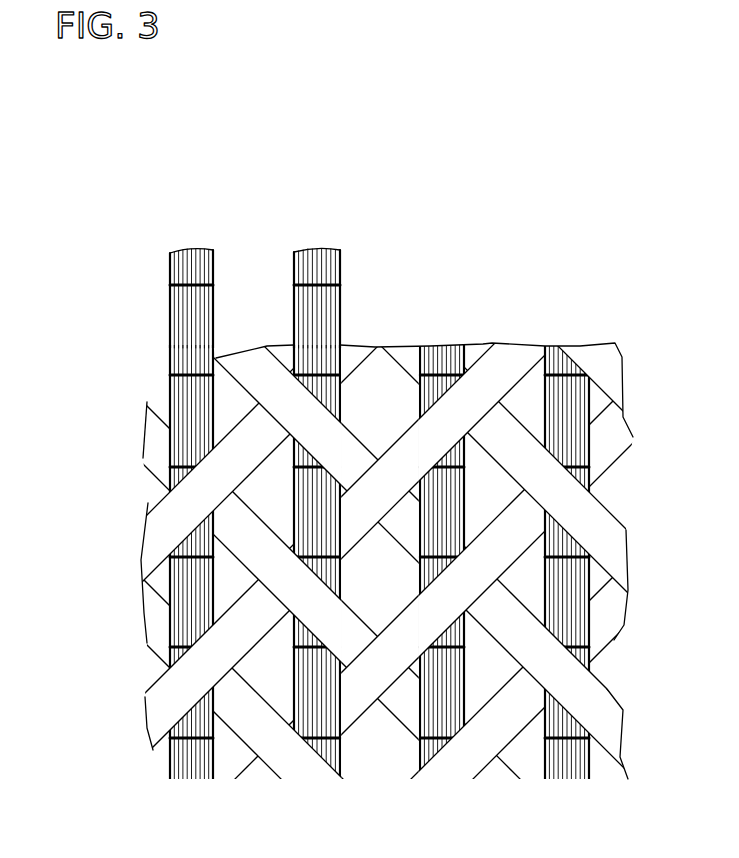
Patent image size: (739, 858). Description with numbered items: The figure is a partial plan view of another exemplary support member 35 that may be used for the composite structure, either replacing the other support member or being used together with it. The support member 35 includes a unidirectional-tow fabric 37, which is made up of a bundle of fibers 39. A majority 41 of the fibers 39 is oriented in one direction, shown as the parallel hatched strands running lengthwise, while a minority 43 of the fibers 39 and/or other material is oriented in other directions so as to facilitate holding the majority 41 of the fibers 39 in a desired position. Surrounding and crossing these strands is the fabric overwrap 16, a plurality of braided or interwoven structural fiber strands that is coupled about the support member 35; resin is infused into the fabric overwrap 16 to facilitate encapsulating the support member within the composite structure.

The fabric overwrap 16 is at (163, 537).
The support member 35 is at (156, 345).
The unidirectional-tow fabric 37 is at (187, 310).
The fibers 39 is at (178, 259).
The majority of fibers 41 is at (201, 259).
The minority of fibers 43 is at (176, 573).